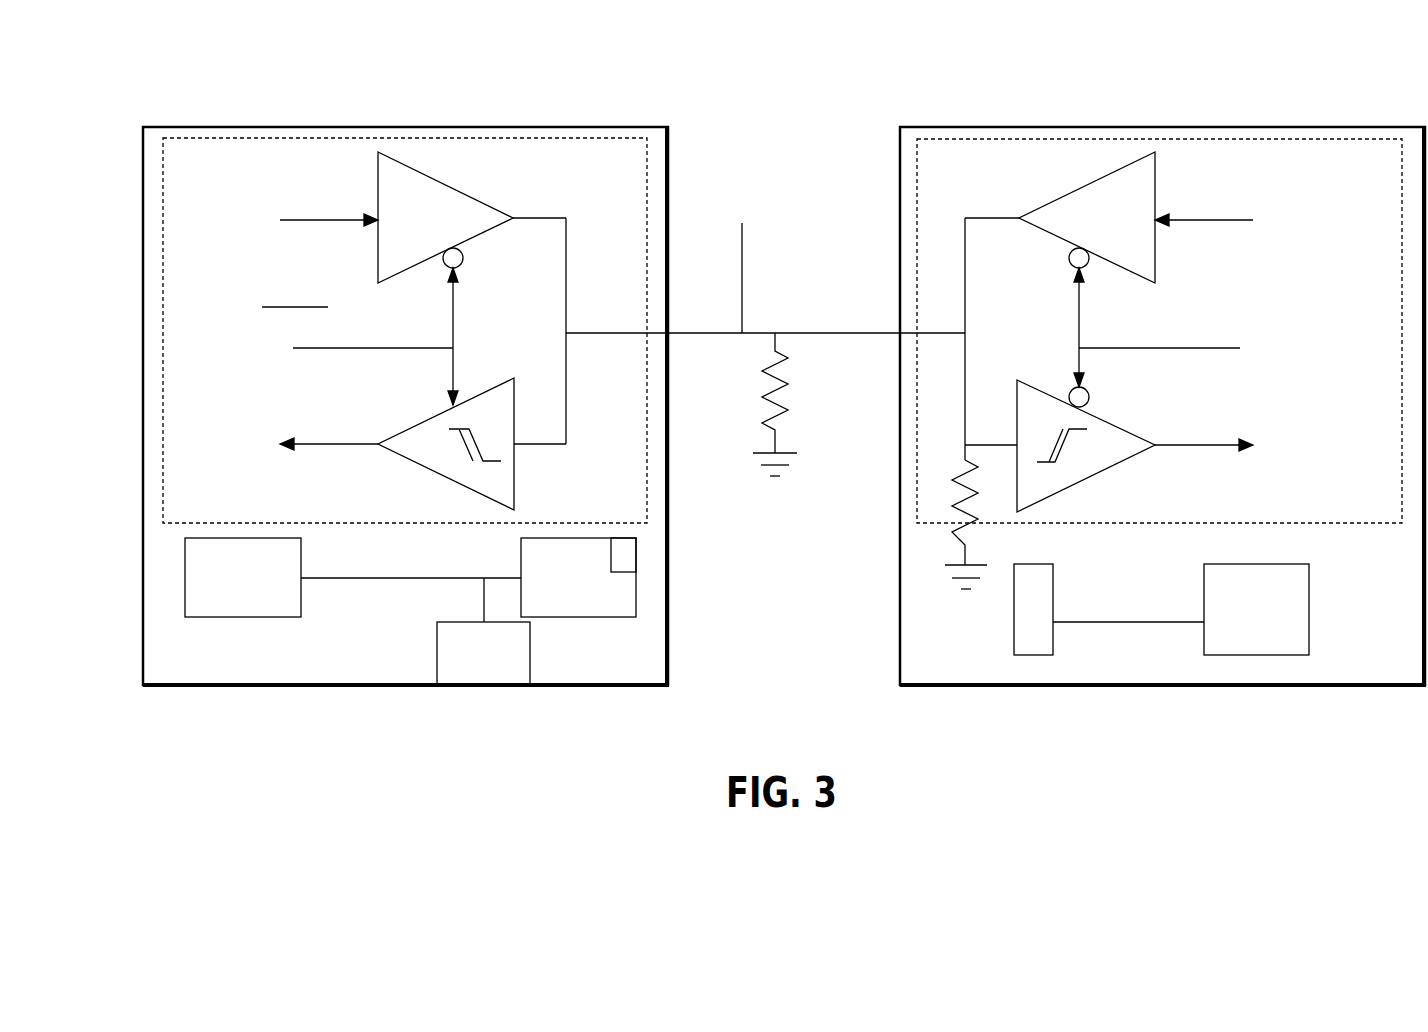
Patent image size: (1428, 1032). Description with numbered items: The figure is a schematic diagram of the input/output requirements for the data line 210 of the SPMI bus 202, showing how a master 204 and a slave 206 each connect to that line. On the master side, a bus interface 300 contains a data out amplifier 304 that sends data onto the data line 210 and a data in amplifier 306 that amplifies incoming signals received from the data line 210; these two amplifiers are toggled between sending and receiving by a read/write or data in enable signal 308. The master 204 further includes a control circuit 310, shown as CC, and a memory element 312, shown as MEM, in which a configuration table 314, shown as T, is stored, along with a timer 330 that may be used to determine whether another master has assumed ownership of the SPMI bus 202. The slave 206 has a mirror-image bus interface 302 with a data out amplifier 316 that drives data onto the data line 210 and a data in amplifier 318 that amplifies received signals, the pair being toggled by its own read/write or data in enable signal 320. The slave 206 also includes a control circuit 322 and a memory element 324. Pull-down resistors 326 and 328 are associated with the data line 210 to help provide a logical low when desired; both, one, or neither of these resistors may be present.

The SPMI bus 202 is at (793, 101).
The master 204 is at (418, 126).
The slave 206 is at (1175, 126).
The data line 210 is at (692, 331).
The bus interface 300 is at (600, 137).
The bus interface 302 is at (1368, 138).
The data out amplifier 304 is at (482, 200).
The data in amplifier 306 is at (490, 390).
The read/write or data in enable signal 308 is at (339, 350).
The control circuit 310 is at (250, 617).
The memory element 312 is at (636, 595).
The configuration table 314 is at (636, 548).
The data out amplifier 316 is at (1060, 200).
The data in amplifier 318 is at (1125, 460).
The read/write or data in enable signal 320 is at (1160, 350).
The control circuit 322 is at (1258, 658).
The memory element 324 is at (1035, 658).
The pull-down resistor 326 is at (788, 414).
The pull-down resistor 328 is at (955, 535).
The timer 330 is at (470, 688).